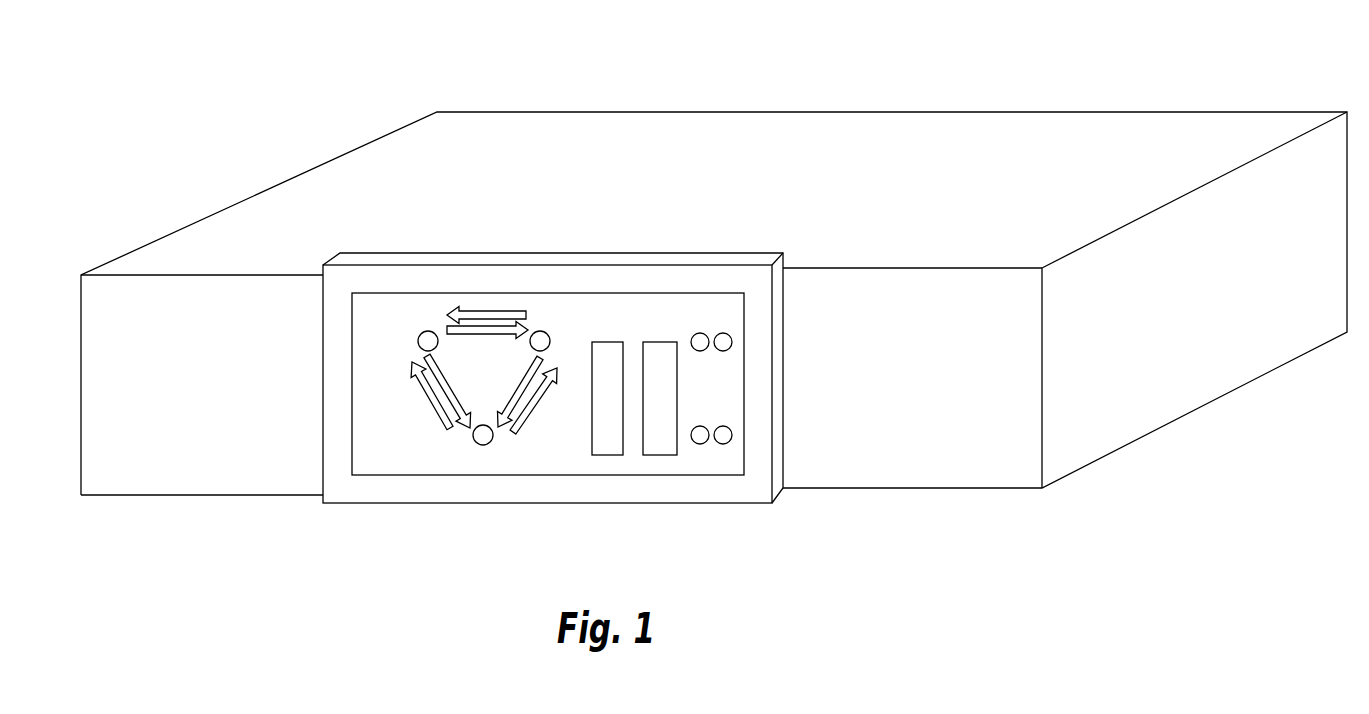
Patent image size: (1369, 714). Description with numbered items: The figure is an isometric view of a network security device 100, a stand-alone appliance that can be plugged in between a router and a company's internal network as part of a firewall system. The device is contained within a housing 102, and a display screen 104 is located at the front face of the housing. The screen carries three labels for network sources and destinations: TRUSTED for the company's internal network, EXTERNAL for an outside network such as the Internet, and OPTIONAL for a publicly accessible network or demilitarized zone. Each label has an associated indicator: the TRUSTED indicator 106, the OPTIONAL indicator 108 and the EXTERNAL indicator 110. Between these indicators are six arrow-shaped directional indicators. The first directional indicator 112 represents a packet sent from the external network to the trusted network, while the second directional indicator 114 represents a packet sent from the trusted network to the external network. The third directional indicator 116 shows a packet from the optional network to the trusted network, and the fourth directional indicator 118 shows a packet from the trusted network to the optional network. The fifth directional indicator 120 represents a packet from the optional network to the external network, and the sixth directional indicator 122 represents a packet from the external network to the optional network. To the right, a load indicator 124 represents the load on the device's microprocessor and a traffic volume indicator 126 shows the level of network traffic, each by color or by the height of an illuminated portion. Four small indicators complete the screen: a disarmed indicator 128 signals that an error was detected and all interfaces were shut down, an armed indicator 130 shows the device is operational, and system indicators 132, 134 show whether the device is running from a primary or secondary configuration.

The security device 100 is at (226, 129).
The housing 102 is at (610, 143).
The display screen 104 is at (396, 540).
The indicator 106 is at (418, 343).
The indicator 108 is at (474, 436).
The indicator 110 is at (533, 316).
The first directional indicator 112 is at (463, 309).
The second directional indicator 114 is at (498, 327).
The third directional indicator 116 is at (420, 374).
The fourth directional indicator 118 is at (445, 407).
The fifth directional indicator 120 is at (538, 402).
The sixth directional indicator 122 is at (517, 413).
The load indicator 124 is at (608, 342).
The traffic volume indicator 126 is at (650, 341).
The disarmed indicator 128 is at (703, 350).
The armed indicator 130 is at (723, 352).
The system indicator 132 is at (703, 444).
The system indicator 134 is at (723, 445).